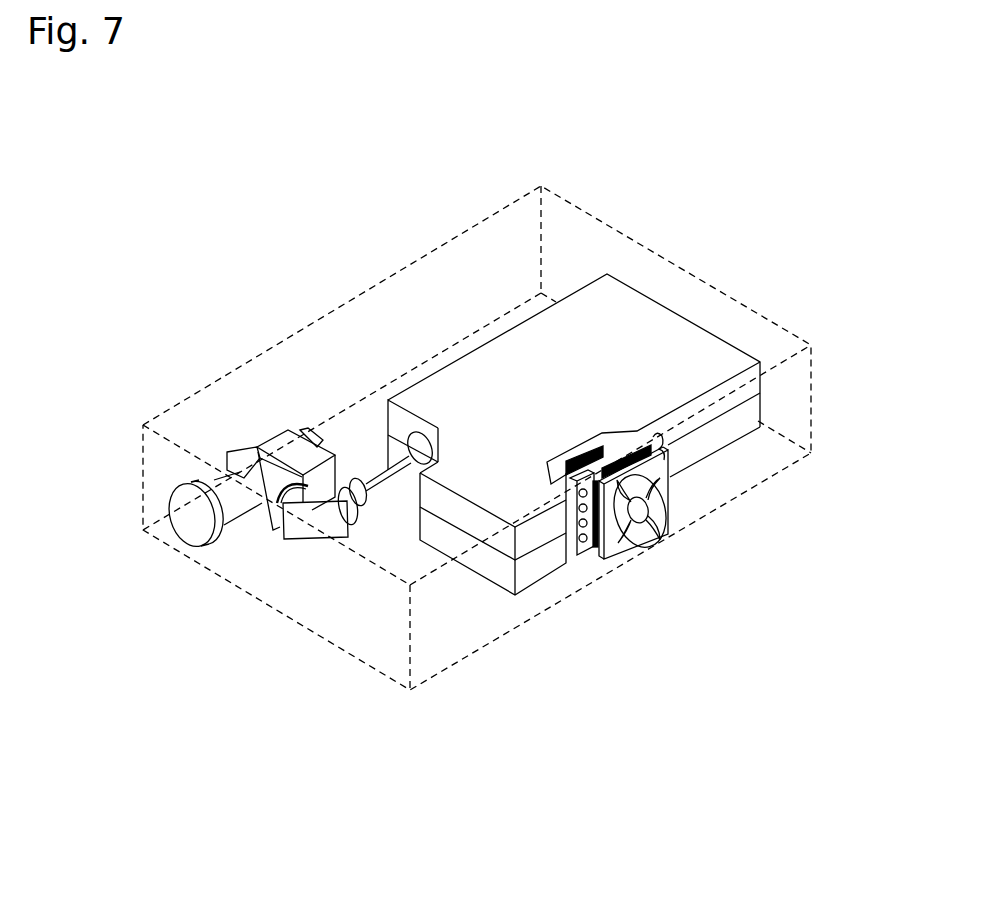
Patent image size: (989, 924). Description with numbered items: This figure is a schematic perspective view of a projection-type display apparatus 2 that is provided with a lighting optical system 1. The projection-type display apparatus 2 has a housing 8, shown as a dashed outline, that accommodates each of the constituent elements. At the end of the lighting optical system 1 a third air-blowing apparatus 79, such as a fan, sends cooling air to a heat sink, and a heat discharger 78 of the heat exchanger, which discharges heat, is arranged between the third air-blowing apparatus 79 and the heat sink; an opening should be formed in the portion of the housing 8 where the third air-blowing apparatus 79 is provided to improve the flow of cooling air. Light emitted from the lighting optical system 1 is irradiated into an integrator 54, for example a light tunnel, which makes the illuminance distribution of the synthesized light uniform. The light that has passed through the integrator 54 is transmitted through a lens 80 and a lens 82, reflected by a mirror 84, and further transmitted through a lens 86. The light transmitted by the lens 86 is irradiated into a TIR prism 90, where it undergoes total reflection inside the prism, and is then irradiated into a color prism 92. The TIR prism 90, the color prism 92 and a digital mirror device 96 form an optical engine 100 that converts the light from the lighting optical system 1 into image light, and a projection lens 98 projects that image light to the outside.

The lighting optical system 1 is at (688, 310).
The projection-type display apparatus 2 is at (214, 233).
The housing 8 is at (601, 222).
The integrator 54 is at (388, 440).
The heat discharger 78 is at (588, 548).
The third air-blowing apparatus 79 is at (668, 518).
The lens 80 is at (361, 477).
The lens 82 is at (362, 505).
The mirror 84 is at (300, 538).
The lens 86 is at (227, 470).
The TIR prism 90 is at (243, 450).
The color prism 92 is at (275, 445).
The digital mirror device 96 is at (313, 433).
The projection lens 98 is at (188, 530).
The optical engine 100 is at (256, 538).